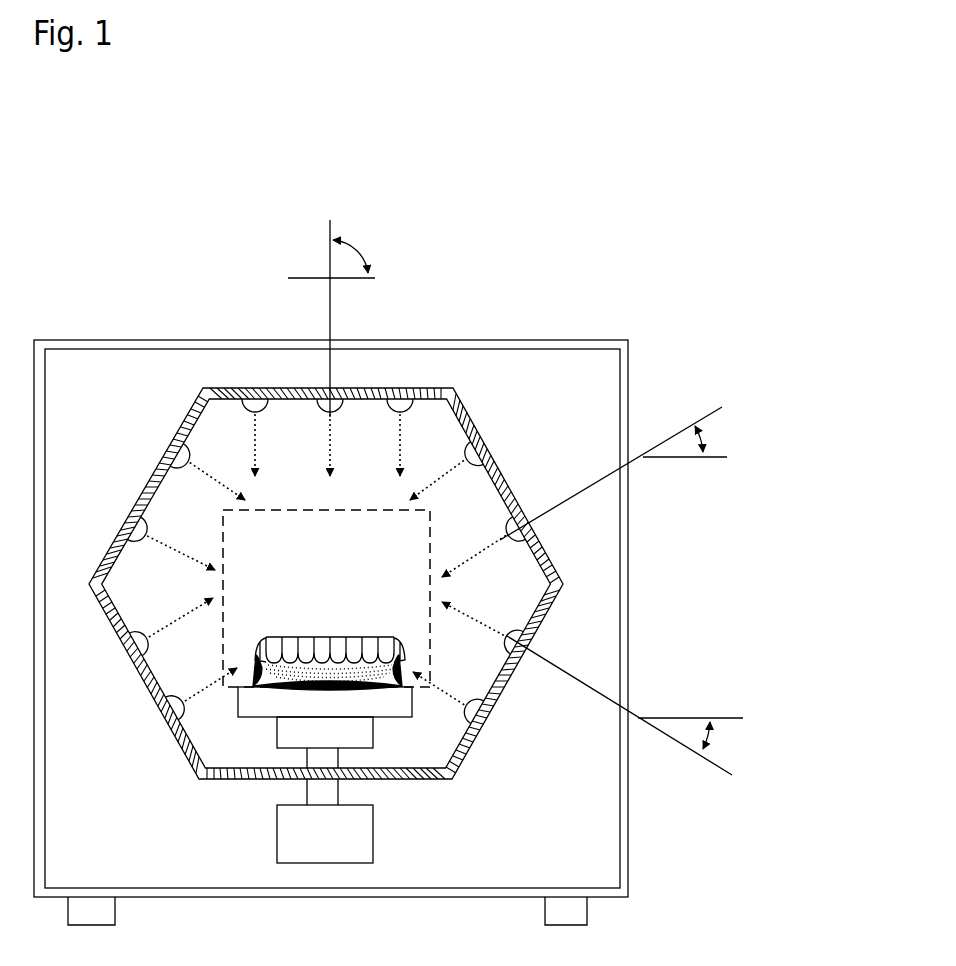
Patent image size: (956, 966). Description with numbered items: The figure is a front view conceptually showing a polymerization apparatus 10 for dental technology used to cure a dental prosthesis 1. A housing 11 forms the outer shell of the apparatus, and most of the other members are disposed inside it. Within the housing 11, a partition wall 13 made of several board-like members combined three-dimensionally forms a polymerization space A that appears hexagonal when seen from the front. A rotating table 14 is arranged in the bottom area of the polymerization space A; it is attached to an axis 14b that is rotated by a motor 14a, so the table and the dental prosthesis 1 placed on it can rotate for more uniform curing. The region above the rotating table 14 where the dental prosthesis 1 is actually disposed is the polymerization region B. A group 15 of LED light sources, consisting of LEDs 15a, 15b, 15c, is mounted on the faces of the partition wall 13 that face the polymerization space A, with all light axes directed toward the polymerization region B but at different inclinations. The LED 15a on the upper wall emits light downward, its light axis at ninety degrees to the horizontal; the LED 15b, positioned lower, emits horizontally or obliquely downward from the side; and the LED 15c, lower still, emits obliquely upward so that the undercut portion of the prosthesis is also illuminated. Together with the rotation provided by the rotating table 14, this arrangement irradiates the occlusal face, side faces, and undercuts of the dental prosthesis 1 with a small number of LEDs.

The polymerization apparatus for dental technology 10 is at (379, 161).
The housing 11 is at (546, 340).
The partition wall 13 is at (503, 483).
The rotating table 14 is at (259, 703).
The motor 14a is at (352, 838).
The axis 14b is at (340, 793).
The group of LED light sources 15 is at (220, 433).
The LED 15a is at (253, 397).
The LED 15b is at (175, 452).
The LED 15c is at (520, 640).
The dental prosthesis 1 is at (322, 646).
The polymerization space A is at (510, 573).
The polymerization region B is at (338, 556).